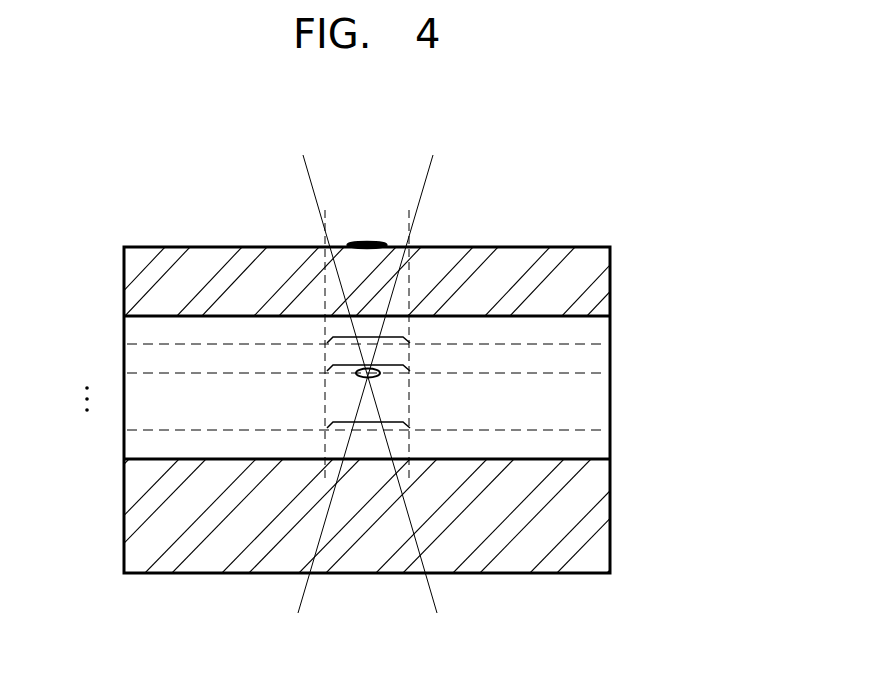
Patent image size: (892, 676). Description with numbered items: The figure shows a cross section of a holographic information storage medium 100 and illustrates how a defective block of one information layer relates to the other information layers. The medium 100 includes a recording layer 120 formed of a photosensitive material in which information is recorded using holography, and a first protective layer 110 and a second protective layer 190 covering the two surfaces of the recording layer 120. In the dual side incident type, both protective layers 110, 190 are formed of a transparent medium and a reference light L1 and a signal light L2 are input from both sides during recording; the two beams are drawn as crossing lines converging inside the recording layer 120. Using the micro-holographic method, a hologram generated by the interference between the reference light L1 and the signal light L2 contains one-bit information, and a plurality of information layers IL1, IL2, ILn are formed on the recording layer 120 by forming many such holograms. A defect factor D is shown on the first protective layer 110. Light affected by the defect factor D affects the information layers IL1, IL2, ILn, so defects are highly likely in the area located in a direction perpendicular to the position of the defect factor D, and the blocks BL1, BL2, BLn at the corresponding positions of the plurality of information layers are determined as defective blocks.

The holographic information storage medium 100 is at (647, 219).
The first protective layer 110 is at (606, 283).
The recording layer 120 is at (606, 407).
The second protective layer 190 is at (606, 521).
The first information layer IL1 is at (151, 344).
The second information layer IL2 is at (151, 373).
The n-th information layer ILn is at (151, 430).
The first block BL1 is at (363, 337).
The second block BL2 is at (363, 365).
The n-th block BLn is at (363, 422).
The defect factor D is at (368, 243).
The reference light L1 is at (422, 188).
The signal light L2 is at (437, 598).